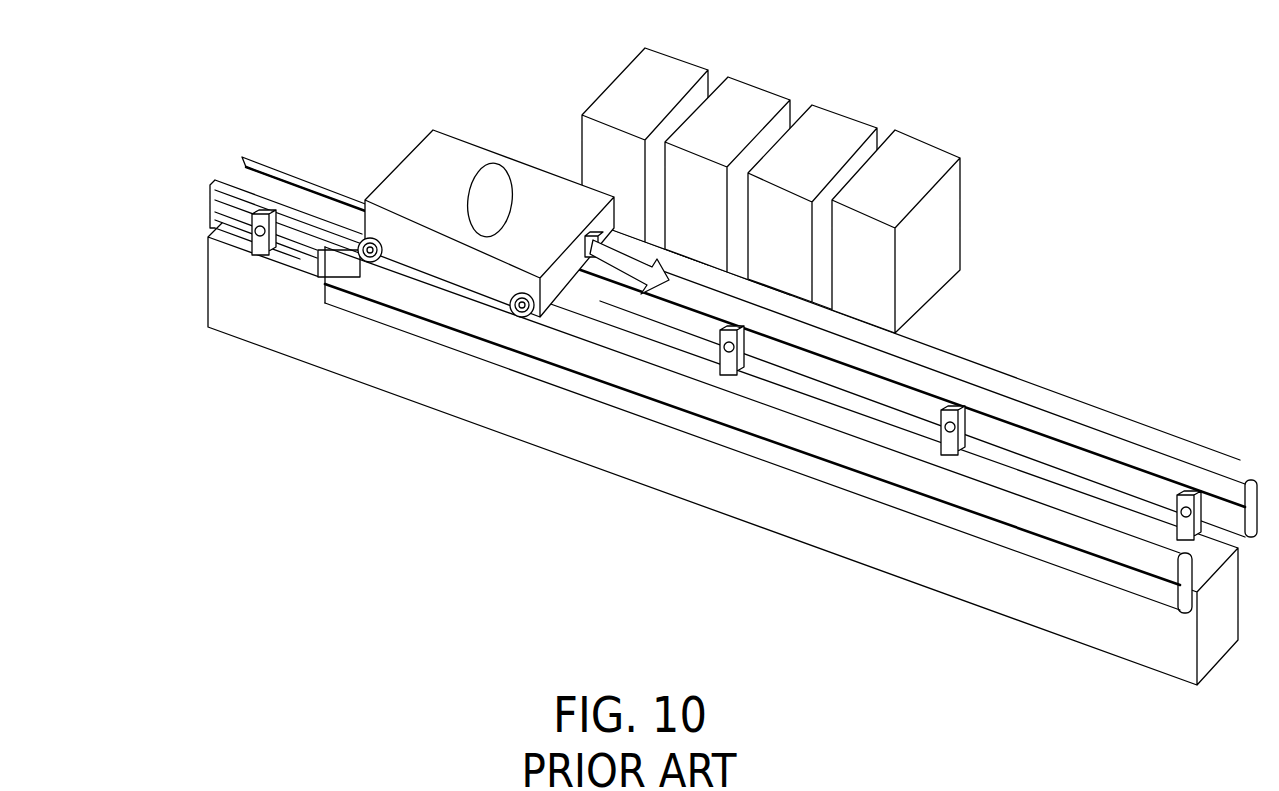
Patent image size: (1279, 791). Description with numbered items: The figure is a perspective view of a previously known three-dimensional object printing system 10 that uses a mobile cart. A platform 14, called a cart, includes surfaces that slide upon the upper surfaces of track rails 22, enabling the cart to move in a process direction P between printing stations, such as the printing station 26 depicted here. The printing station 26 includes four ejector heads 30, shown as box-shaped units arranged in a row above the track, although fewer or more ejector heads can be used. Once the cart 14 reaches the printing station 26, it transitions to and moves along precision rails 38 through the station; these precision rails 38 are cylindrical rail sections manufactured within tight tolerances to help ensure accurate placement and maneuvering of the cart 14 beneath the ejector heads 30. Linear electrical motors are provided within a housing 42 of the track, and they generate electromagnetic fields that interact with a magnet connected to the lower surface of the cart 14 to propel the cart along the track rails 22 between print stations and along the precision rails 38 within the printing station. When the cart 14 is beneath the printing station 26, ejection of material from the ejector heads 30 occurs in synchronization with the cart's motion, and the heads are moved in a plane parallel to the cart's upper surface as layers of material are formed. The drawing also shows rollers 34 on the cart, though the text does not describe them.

The three-dimensional object printing system 10 is at (732, 354).
The platform 14 is at (487, 143).
The track rails 22 is at (215, 178).
The printing station 26 is at (807, 178).
The ejector heads 30 is at (964, 158).
The rollers 34 is at (360, 254).
The precision rails 38 is at (1044, 409).
The housing 42 is at (995, 574).
The process direction P is at (606, 285).